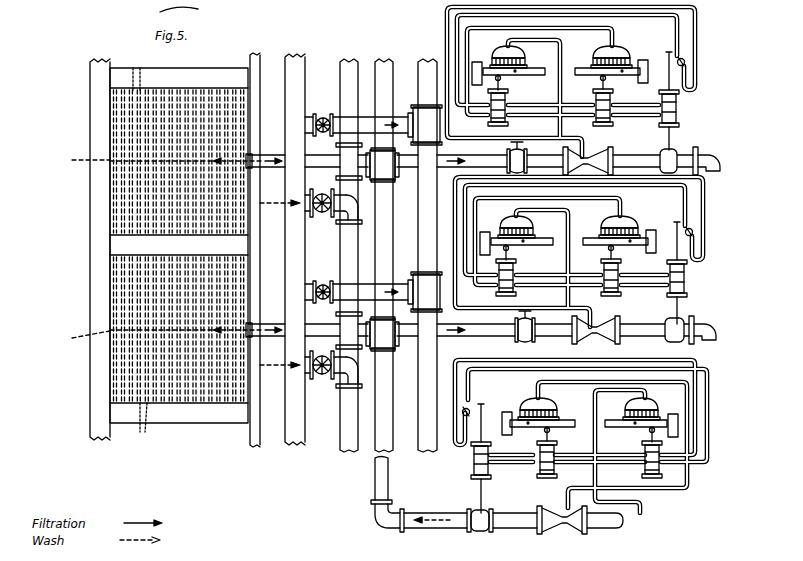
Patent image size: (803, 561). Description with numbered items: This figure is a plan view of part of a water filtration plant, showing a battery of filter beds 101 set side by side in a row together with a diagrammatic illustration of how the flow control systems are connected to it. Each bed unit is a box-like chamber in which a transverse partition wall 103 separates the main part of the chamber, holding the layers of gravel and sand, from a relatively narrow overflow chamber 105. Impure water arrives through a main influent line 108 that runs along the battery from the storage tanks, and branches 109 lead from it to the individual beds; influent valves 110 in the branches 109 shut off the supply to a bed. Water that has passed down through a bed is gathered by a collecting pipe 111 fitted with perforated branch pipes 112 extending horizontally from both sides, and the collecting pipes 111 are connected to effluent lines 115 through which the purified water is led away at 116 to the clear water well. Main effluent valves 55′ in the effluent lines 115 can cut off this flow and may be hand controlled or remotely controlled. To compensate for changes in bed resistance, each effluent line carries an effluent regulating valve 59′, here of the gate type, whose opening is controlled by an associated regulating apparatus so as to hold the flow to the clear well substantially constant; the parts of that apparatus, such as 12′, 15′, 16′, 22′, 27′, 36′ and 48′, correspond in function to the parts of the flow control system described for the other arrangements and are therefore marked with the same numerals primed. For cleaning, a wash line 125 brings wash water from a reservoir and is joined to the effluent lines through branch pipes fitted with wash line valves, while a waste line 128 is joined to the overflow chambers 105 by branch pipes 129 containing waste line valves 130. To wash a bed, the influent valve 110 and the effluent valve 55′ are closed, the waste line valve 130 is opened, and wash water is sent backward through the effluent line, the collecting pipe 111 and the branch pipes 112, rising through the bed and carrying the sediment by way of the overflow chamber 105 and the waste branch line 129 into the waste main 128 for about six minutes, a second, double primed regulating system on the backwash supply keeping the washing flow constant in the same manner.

The filter beds 101 is at (36, 118).
The transverse partition wall 103 is at (258, 438).
The overflow chamber 105 is at (263, 108).
The main influent line 108 is at (427, 62).
The branches 109 is at (398, 99).
The influent valves 110 is at (322, 115).
The collecting pipes 111 is at (157, 250).
The branch pipes 112 is at (143, 255).
The effluent lines 115 is at (322, 155).
The wash line 125 is at (382, 62).
The waste line 128 is at (340, 62).
The branch pipes 129 is at (360, 210).
The waste line valves 130 is at (322, 215).
The effluent outlet 116 is at (721, 158).
The venturi tube 12′ is at (595, 150).
The pilot valve 15′ is at (622, 49).
The pilot valve 16′ is at (470, 44).
The control valve 22′ is at (594, 191).
The control valve 27′ is at (680, 112).
The diaphragm valve 36′ is at (516, 266).
The tube connection 48′ is at (686, 63).
The main effluent valves 55′ is at (510, 168).
The effluent regulating valve 59′ is at (680, 173).